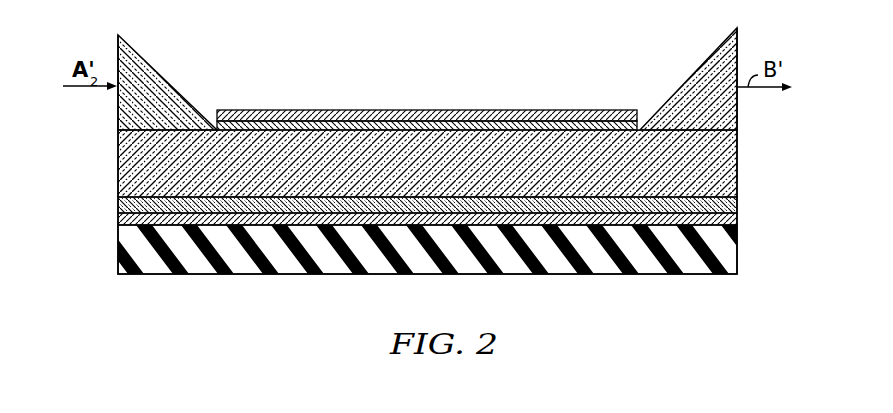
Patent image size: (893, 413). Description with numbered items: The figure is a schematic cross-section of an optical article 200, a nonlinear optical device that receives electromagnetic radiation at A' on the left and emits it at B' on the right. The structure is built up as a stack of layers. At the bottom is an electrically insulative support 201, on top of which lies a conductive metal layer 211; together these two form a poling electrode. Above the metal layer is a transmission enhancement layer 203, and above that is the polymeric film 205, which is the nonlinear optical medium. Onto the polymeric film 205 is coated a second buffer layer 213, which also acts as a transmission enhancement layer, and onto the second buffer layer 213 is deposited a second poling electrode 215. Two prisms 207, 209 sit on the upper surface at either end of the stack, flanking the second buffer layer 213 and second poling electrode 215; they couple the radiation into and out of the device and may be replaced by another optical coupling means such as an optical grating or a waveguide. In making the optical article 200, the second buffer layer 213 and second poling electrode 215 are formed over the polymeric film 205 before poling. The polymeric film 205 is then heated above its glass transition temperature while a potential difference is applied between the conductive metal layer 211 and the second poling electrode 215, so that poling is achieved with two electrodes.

The optical article 200 is at (186, 292).
The electrically insulative support 201 is at (740, 254).
The transmission enhancement layer 203 is at (740, 202).
The polymeric film 205 is at (122, 168).
The prism 207 is at (163, 83).
The prism 209 is at (696, 67).
The conductive metal layer 211 is at (118, 219).
The second buffer layer 213 is at (523, 121).
The second poling electrode 215 is at (336, 110).